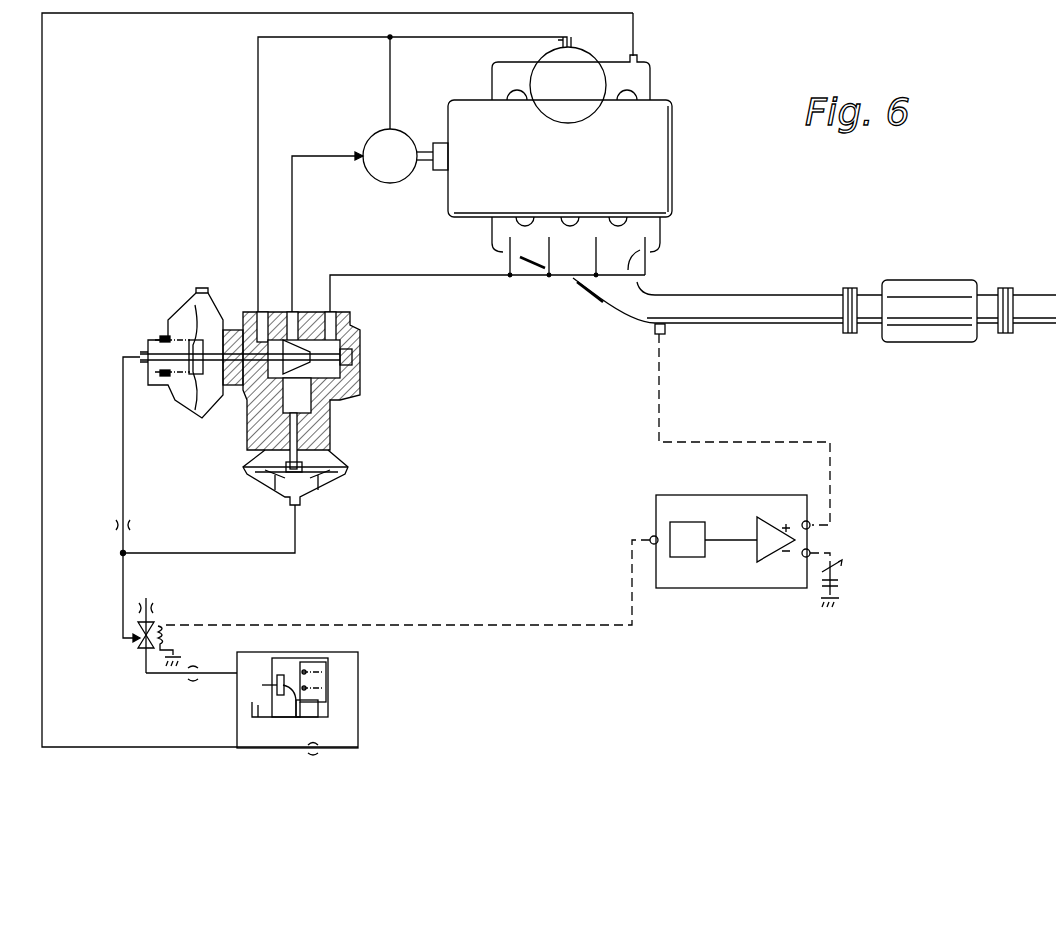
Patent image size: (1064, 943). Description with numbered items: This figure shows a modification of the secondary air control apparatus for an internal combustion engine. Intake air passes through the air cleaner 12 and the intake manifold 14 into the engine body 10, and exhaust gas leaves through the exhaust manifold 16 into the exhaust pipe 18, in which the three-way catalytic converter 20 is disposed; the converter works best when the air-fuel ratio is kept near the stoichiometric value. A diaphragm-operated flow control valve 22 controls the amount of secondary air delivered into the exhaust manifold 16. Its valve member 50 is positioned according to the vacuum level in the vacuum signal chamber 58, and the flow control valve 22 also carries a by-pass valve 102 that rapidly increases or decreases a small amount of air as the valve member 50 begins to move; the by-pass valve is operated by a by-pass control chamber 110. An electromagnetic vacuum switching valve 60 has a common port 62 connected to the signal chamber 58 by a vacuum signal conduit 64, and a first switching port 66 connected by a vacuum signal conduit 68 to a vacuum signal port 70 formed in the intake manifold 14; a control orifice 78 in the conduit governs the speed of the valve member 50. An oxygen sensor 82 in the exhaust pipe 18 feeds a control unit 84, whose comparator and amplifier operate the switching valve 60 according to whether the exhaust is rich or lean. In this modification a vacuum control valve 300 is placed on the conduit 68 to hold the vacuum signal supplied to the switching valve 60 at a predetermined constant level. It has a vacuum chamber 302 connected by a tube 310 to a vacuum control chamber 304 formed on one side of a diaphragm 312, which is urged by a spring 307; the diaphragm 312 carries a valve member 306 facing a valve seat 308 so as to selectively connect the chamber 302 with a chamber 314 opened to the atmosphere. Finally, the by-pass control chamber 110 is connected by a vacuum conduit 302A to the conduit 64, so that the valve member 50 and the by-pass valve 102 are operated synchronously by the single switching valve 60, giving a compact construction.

The engine body 10 is at (672, 145).
The air cleaner 12 is at (582, 115).
The intake manifold 14 is at (652, 80).
The exhaust manifold 16 is at (662, 243).
The exhaust pipe 18 is at (760, 292).
The three-way catalytic converter 20 is at (937, 278).
The flow control valve 22 is at (263, 399).
The valve member 50 is at (300, 374).
The vacuum signal chamber 58 is at (165, 400).
The vacuum switching valve 60 is at (123, 652).
The common port 62 is at (136, 636).
The vacuum signal conduit 64 is at (110, 545).
The first switching port 66 is at (140, 650).
The vacuum signal conduit 68 is at (140, 748).
The vacuum signal port 70 is at (640, 58).
The control orifice 78 is at (132, 525).
The air-fuel ratio sensor 82 is at (665, 334).
The control unit 84 is at (715, 590).
The by-pass valve 102 is at (318, 405).
The by-pass control chamber 110 is at (322, 485).
The vacuum control valve 300 is at (281, 674).
The chamber 302 is at (232, 688).
The vacuum conduit 302A is at (270, 554).
The vacuum control chamber 304 is at (330, 700).
The valve member 306 is at (298, 718).
The spring 307 is at (312, 660).
The valve seat 308 is at (262, 672).
The tube 310 is at (258, 718).
The diaphragm 312 is at (318, 720).
The chamber 314 is at (290, 657).